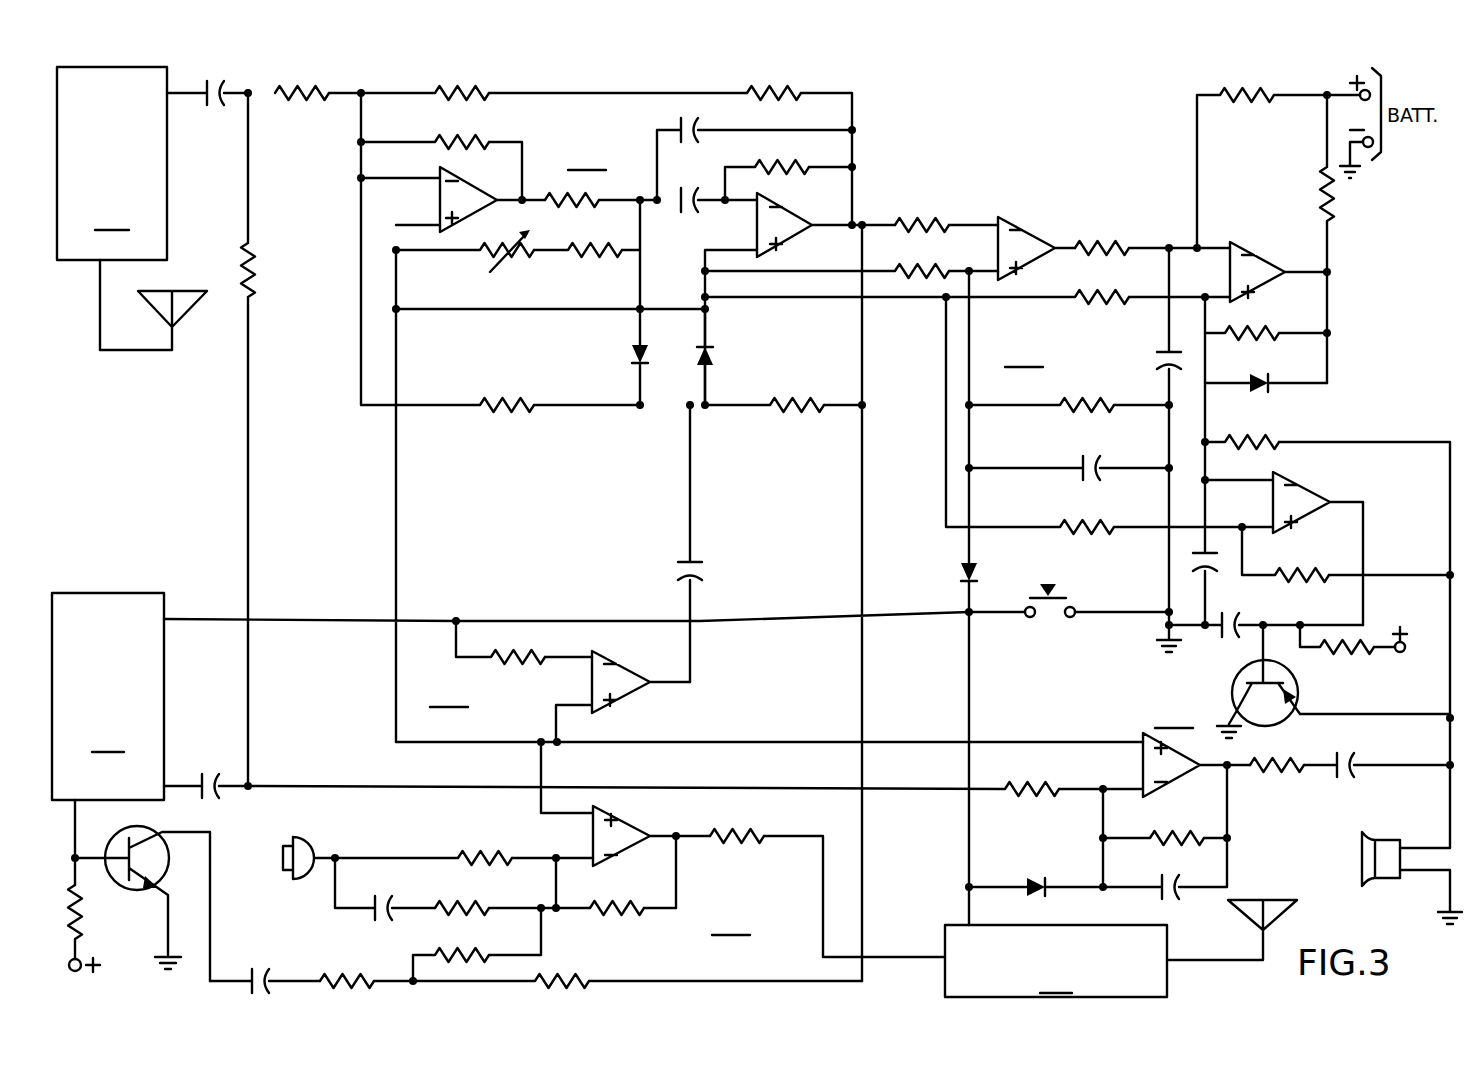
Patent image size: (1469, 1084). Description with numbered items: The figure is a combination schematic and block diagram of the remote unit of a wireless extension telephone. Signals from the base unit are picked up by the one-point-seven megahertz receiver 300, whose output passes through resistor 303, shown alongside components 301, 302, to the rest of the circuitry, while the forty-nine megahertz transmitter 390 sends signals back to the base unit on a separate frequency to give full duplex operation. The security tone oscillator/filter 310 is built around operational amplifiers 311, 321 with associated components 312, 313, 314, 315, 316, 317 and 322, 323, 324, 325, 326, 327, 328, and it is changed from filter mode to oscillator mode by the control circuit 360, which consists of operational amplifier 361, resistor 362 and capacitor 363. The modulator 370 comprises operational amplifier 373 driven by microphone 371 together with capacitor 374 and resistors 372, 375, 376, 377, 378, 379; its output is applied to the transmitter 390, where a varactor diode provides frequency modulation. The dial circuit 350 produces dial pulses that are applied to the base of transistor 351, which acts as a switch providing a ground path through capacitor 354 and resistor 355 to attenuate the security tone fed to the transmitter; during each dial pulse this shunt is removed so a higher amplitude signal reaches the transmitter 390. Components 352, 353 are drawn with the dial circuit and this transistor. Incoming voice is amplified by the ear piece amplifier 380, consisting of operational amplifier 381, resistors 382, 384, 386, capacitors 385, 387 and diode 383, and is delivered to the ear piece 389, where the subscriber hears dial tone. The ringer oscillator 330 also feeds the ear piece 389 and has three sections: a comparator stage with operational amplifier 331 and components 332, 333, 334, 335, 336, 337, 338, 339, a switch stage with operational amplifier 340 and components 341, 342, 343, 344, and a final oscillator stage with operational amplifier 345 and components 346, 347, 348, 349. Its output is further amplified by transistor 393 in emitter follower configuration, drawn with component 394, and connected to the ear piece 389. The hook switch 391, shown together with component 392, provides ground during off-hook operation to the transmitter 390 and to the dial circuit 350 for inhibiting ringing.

The 1.7 MHz receiver 300 is at (112, 163).
The capacitor 301 is at (222, 86).
The resistor 302 is at (315, 86).
The resistor 303 is at (254, 262).
The security tone oscillator/filter 310 is at (588, 158).
The operational amplifier 311 is at (461, 186).
The associated component 312 is at (473, 86).
The associated component 313 is at (470, 136).
The associated component 314 is at (575, 198).
The associated component 315 is at (518, 266).
The associated component 316 is at (589, 266).
The associated component 317 is at (520, 404).
The operational amplifier 321 is at (792, 234).
The associated component 322 is at (785, 86).
The associated component 323 is at (695, 121).
The associated component 324 is at (688, 198).
The associated component 325 is at (775, 158).
The associated component 326 is at (630, 352).
The associated component 327 is at (710, 350).
The associated component 328 is at (800, 404).
The ringer oscillator 330 is at (1025, 355).
The operational amplifier 331 is at (1020, 236).
The associated component 332 is at (925, 221).
The associated component 333 is at (925, 266).
The associated component 334 is at (1108, 236).
The associated component 335 is at (1108, 296).
The associated component 336 is at (1090, 398).
The associated component 337 is at (1090, 453).
The associated component 338 is at (1090, 524).
The associated component 339 is at (1152, 358).
The operational amplifier 340 is at (1252, 256).
The switch stage component 341 is at (1262, 96).
The switch stage component 342 is at (1320, 194).
The switch stage component 343 is at (1252, 328).
The switch stage component 344 is at (1255, 374).
The operational amplifier 345 is at (1312, 498).
The associated component 346 is at (1258, 438).
The resistor 347 is at (1302, 569).
The capacitor 348 is at (1240, 640).
The associated component 349 is at (1220, 572).
The dial circuit 350 is at (108, 696).
The transistor 351 is at (128, 834).
The capacitor 352 is at (218, 780).
The resistor 353 is at (78, 912).
The capacitor 354 is at (245, 968).
The resistor 355 is at (335, 968).
The control circuit 360 is at (450, 695).
The operational amplifier 361 is at (607, 666).
The resistor 362 is at (517, 651).
The capacitor 363 is at (705, 567).
The modulator circuit 370 is at (732, 923).
The microphone 371 is at (300, 839).
The resistor 372 is at (482, 849).
The operational amplifier 373 is at (617, 821).
The capacitor 374 is at (377, 889).
The resistor 375 is at (455, 901).
The resistor 376 is at (610, 901).
The resistor 377 is at (435, 951).
The resistor 378 is at (732, 824).
The resistor 379 is at (562, 971).
The ear piece amplifier 380 is at (1175, 716).
The operational amplifier 381 is at (1170, 784).
The resistor 382 is at (1010, 784).
The diode 383 is at (1023, 874).
The resistor 384 is at (1158, 834).
The capacitor 385 is at (1158, 881).
The resistor 386 is at (1267, 782).
The capacitor 387 is at (1342, 782).
The ear piece 389 is at (1375, 839).
The 49 MHz transmitter 390 is at (1056, 961).
The hook switch 391 is at (1045, 622).
The diode 392 is at (977, 564).
The transistor 393 is at (1228, 686).
The resistor 394 is at (1344, 656).